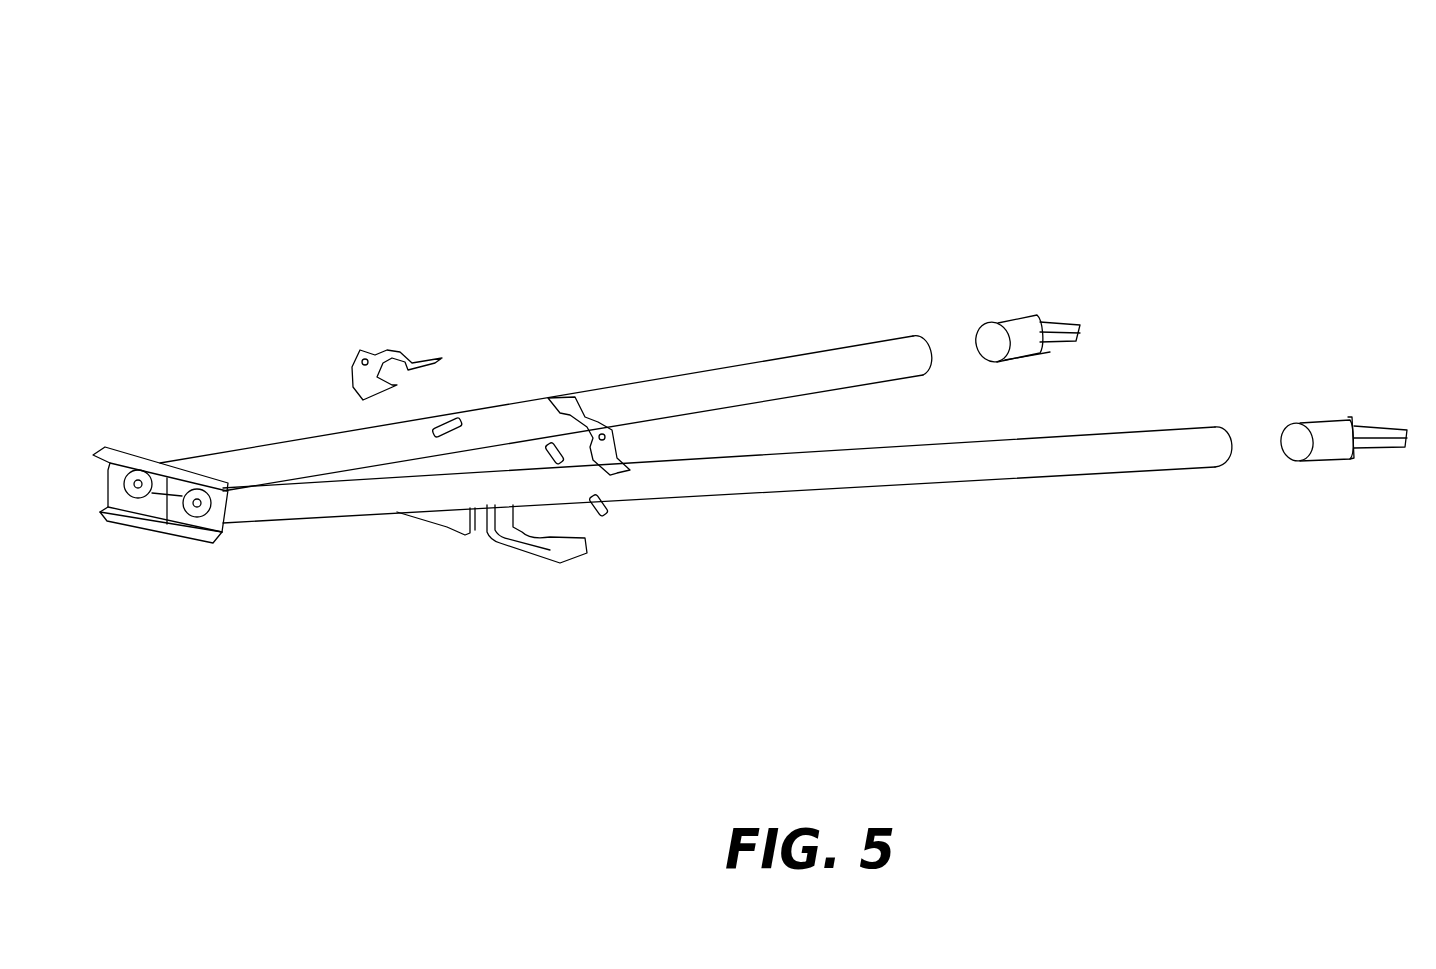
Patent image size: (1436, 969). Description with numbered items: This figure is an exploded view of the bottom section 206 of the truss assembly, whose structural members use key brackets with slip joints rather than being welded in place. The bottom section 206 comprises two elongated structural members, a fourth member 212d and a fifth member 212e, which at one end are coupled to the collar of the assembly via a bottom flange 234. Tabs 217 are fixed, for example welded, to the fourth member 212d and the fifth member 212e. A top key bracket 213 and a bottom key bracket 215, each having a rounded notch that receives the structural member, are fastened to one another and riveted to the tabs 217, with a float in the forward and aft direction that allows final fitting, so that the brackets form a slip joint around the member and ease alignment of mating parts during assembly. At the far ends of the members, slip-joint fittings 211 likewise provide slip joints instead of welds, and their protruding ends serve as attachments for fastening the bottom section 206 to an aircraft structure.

The bottom section 206 is at (583, 154).
The bottom flange 234 is at (112, 452).
The fourth member 212d is at (778, 367).
The fifth member 212e is at (950, 477).
The top key bracket 213 is at (360, 350).
The tabs 217 is at (549, 450).
The bottom key bracket 215 is at (447, 523).
The slip-joint fittings 211 is at (1055, 300).